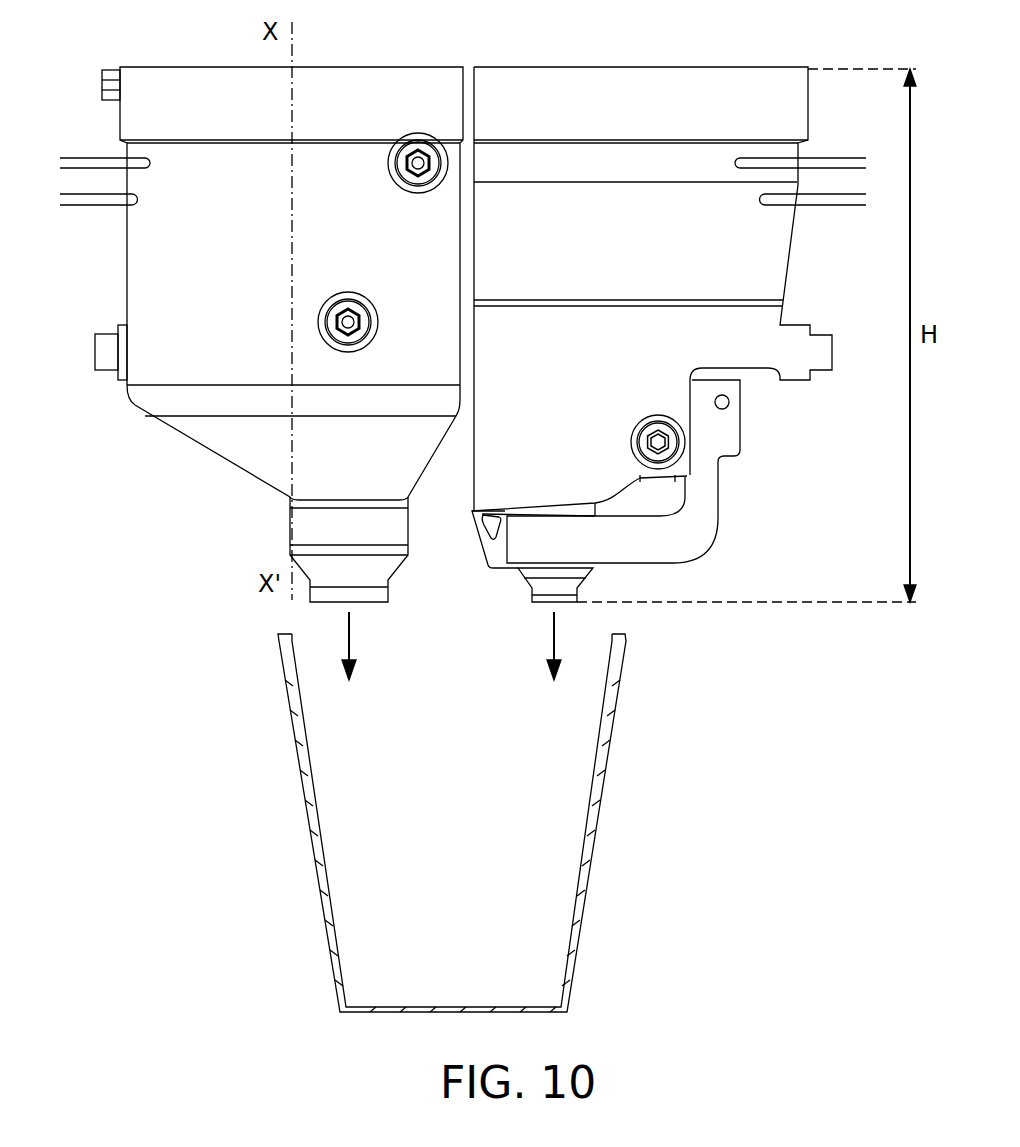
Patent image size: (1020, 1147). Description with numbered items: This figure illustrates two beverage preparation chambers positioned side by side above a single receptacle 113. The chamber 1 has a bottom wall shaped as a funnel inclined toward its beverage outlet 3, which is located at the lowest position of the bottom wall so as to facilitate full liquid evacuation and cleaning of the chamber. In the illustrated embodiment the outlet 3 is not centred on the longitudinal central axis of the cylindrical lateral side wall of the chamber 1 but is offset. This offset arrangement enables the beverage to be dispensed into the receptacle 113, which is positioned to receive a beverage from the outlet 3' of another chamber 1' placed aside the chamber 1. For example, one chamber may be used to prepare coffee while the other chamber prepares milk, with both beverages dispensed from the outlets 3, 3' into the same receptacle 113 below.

The chamber 1 is at (261, 350).
The another chamber 1' is at (669, 353).
The beverage outlet 3 is at (327, 565).
The outlet 3' is at (591, 603).
The receptacle 113 is at (590, 820).